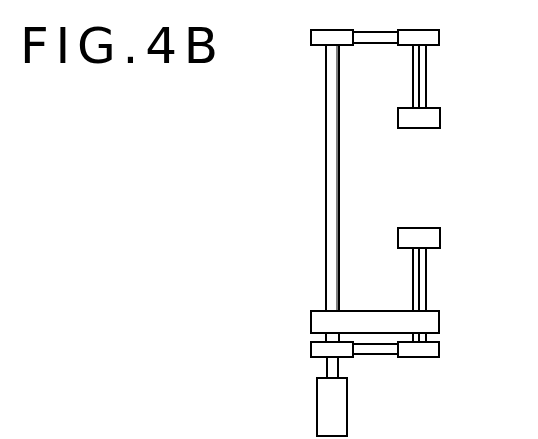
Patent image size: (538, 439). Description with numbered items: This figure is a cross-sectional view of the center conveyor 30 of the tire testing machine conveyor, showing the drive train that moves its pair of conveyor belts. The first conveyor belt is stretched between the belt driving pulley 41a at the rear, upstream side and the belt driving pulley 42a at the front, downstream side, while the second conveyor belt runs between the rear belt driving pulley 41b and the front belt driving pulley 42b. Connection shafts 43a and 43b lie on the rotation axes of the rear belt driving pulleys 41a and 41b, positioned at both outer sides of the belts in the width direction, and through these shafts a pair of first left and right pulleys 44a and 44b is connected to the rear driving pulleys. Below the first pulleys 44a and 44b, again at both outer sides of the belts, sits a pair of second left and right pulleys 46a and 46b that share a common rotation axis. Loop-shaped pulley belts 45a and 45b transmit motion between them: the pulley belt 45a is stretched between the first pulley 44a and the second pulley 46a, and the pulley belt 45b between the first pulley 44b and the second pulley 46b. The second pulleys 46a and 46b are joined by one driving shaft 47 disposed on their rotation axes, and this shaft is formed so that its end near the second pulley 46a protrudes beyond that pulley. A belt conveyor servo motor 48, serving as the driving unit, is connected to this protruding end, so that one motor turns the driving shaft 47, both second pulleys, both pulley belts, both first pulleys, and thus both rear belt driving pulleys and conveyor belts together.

The vibration wave motor / driving device 30 is at (306, 258).
The belt driving pulley 41a is at (440, 238).
The belt driving pulley 41b is at (440, 118).
The belt driving pulley 42a is at (11, 240).
The belt driving pulley 42b is at (12, 122).
The connection shaft 43a is at (427, 279).
The connection shaft 43b is at (427, 77).
The first pulley 44a is at (440, 351).
The first pulley 44b is at (440, 39).
The pulley belt 45a is at (375, 355).
The pulley belt 45b is at (375, 44).
The second pulley 46a is at (311, 348).
The second pulley 46b is at (311, 37).
The driving shaft 47 is at (326, 177).
The belt conveyor servo motor 48 is at (317, 405).